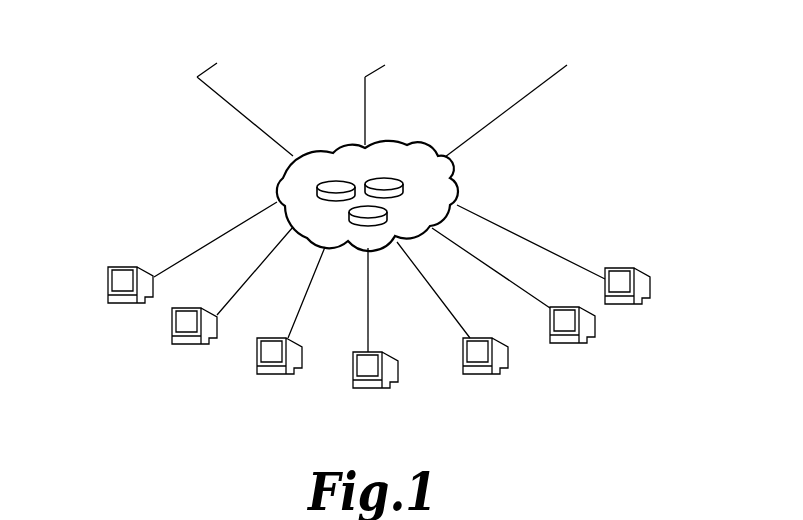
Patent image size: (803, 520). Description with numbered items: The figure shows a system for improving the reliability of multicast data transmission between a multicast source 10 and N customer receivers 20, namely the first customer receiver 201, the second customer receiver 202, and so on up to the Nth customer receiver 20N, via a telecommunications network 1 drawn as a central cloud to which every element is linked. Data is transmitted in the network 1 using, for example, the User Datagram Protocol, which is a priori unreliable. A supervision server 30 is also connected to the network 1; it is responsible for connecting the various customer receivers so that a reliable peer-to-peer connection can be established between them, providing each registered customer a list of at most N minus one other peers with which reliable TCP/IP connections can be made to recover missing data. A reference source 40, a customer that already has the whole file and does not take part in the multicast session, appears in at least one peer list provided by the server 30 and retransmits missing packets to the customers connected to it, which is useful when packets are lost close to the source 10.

The telecommunications network 1 is at (452, 173).
The multicast source 10 is at (212, 52).
The reference source 40 is at (377, 50).
The supervision server 30 is at (562, 52).
The customer receivers 20 is at (390, 310).
The first customer receiver 201 is at (115, 303).
The second customer receiver 202 is at (178, 338).
The Nth customer receiver 20N is at (647, 287).